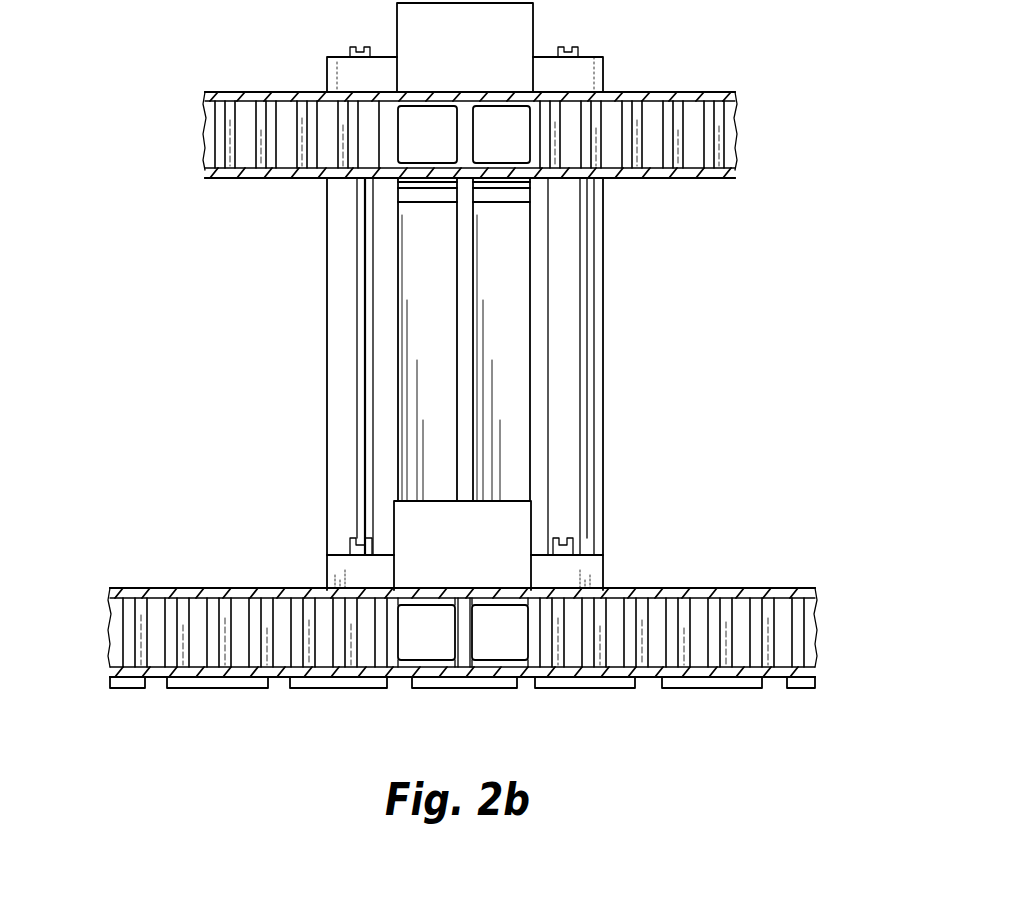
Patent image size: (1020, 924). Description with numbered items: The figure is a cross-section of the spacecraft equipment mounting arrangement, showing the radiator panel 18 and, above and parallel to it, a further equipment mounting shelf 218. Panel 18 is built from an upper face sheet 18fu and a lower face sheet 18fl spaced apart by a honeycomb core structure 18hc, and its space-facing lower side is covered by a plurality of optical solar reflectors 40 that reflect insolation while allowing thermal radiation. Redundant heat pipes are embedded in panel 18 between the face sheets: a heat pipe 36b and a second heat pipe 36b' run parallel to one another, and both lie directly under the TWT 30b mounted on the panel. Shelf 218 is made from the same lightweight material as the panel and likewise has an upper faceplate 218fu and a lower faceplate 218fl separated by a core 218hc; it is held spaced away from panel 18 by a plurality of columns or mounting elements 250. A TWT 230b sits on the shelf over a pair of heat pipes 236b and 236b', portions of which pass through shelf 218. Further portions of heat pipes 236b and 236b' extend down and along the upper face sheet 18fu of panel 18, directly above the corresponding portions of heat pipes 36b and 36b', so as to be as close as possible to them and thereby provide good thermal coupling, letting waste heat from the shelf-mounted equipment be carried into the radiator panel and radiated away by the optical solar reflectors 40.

The equipment mounting shelf 218 is at (278, 203).
The core of the shelf 218hc is at (735, 129).
The upper faceplate of the shelf 218fu is at (714, 92).
The lower faceplate of the shelf 218fl is at (710, 182).
The columns or mounting elements 250 is at (327, 323).
The TWT 230b is at (533, 30).
The heat pipe 236b is at (355, 280).
The heat pipe 236b' is at (574, 280).
The TWT 30b is at (603, 576).
The panel 18 is at (232, 574).
The honeycomb core structure 18hc is at (110, 637).
The upper face sheet 18fu is at (146, 590).
The lower face sheet 18fl is at (158, 680).
The optical solar reflectors 40 is at (335, 688).
The heat pipe 36b is at (418, 665).
The second heat pipe 36b' is at (512, 665).